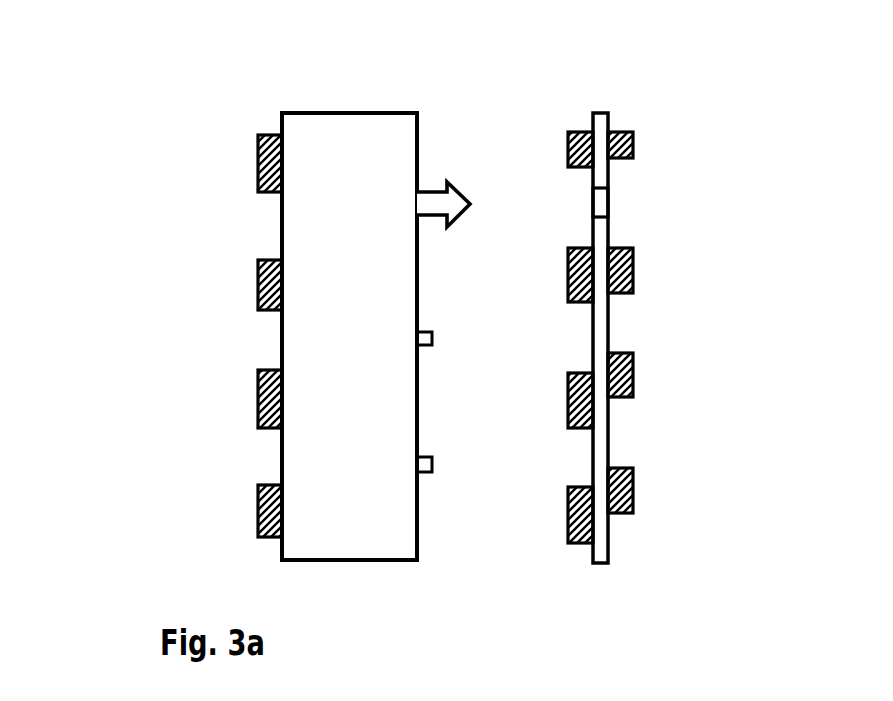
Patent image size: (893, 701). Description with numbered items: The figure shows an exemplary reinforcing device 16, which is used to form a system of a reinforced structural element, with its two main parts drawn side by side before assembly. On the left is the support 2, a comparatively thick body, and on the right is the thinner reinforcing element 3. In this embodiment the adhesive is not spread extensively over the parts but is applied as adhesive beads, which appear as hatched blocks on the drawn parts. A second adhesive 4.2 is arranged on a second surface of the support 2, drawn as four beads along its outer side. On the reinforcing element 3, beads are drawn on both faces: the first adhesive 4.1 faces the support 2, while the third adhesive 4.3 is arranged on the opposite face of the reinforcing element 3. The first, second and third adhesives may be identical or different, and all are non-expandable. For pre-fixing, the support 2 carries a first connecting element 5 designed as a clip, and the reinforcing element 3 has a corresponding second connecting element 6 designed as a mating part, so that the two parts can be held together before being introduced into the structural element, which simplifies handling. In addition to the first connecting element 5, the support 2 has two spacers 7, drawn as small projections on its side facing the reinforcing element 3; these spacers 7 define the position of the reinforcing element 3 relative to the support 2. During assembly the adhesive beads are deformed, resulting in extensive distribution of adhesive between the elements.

The reinforcing device 16 is at (118, 68).
The support 2 is at (343, 133).
The reinforcing element 3 is at (600, 130).
The first adhesive 4.1 is at (578, 278).
The second adhesive 4.2 is at (260, 278).
The third adhesive 4.3 is at (623, 268).
The first connecting element 5 is at (445, 203).
The second connecting element 6 is at (600, 200).
The spacer 7 is at (433, 465).